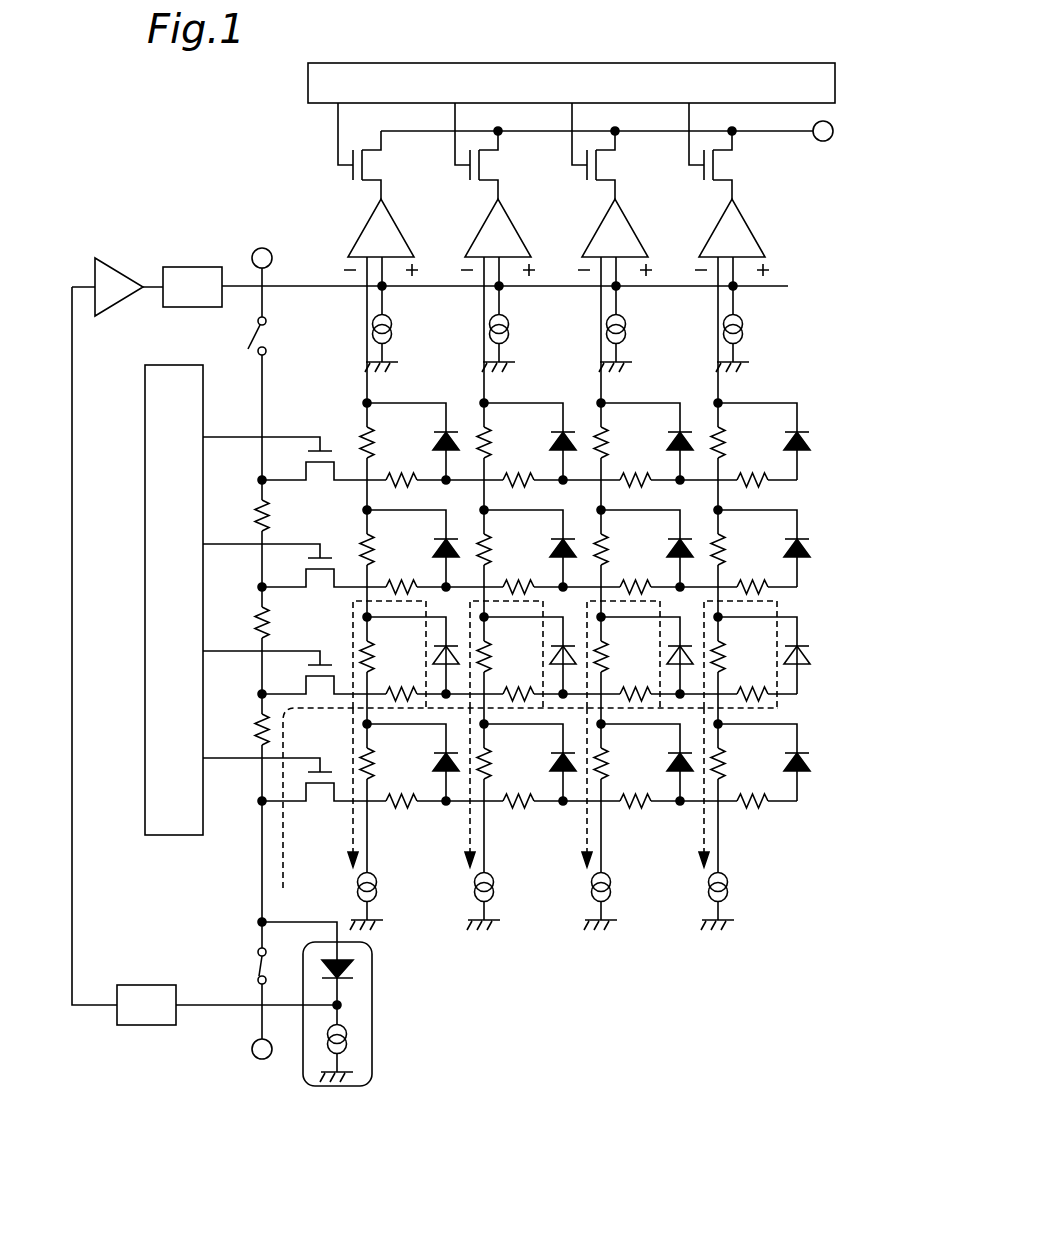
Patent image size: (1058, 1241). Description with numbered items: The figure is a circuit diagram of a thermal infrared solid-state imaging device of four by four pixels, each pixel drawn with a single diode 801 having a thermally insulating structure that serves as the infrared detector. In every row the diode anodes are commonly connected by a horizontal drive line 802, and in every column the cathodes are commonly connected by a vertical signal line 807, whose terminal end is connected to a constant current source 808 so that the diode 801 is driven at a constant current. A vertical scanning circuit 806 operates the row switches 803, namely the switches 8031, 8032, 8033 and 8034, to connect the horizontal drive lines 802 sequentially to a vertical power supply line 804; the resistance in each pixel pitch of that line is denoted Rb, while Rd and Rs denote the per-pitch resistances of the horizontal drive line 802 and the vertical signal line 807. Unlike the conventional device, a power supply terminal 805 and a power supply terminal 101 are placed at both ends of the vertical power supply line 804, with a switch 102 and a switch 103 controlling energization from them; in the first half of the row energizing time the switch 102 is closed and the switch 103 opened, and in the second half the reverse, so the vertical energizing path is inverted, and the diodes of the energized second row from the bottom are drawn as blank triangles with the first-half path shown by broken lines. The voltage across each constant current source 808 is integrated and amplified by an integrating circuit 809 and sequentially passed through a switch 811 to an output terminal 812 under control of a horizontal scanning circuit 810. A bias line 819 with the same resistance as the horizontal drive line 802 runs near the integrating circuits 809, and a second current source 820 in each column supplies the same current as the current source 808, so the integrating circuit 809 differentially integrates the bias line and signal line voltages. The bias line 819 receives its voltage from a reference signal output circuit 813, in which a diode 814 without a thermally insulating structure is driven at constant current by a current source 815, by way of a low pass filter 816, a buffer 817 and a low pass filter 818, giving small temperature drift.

The horizontal scanning circuit 810 is at (308, 78).
The switch 811 is at (350, 176).
The output terminal 812 is at (823, 142).
The integrating circuit 809 is at (356, 239).
The second current source 820 is at (745, 325).
The bias line 819 is at (302, 286).
The buffer 817 is at (110, 262).
The low pass filter 818 is at (185, 267).
The power supply terminal 101 is at (256, 250).
The switch 103 is at (252, 340).
The vertical scanning circuit 806 is at (180, 836).
The vertical power supply line 804 is at (260, 498).
The resistance of vertical power supply line Rb is at (244, 729).
The switch 8034 is at (308, 449).
The switch 8033 is at (308, 556).
The switch 8032 is at (308, 663).
The switch 8031 is at (320, 770).
The switches 803 is at (316, 786).
The vertical signal line 807 is at (720, 845).
The constant current source 808 is at (730, 888).
The diode 801 is at (797, 437).
The horizontal drive line 802 is at (786, 802).
The resistance of vertical signal line Rs is at (386, 654).
The resistance of horizontal drive line Rd is at (402, 681).
The switch 102 is at (258, 966).
The power supply terminal 805 is at (252, 1050).
The low pass filter 816 is at (137, 1026).
The reference signal output circuit 813 is at (372, 1013).
The diode 814 is at (353, 968).
The current source 815 is at (350, 1043).